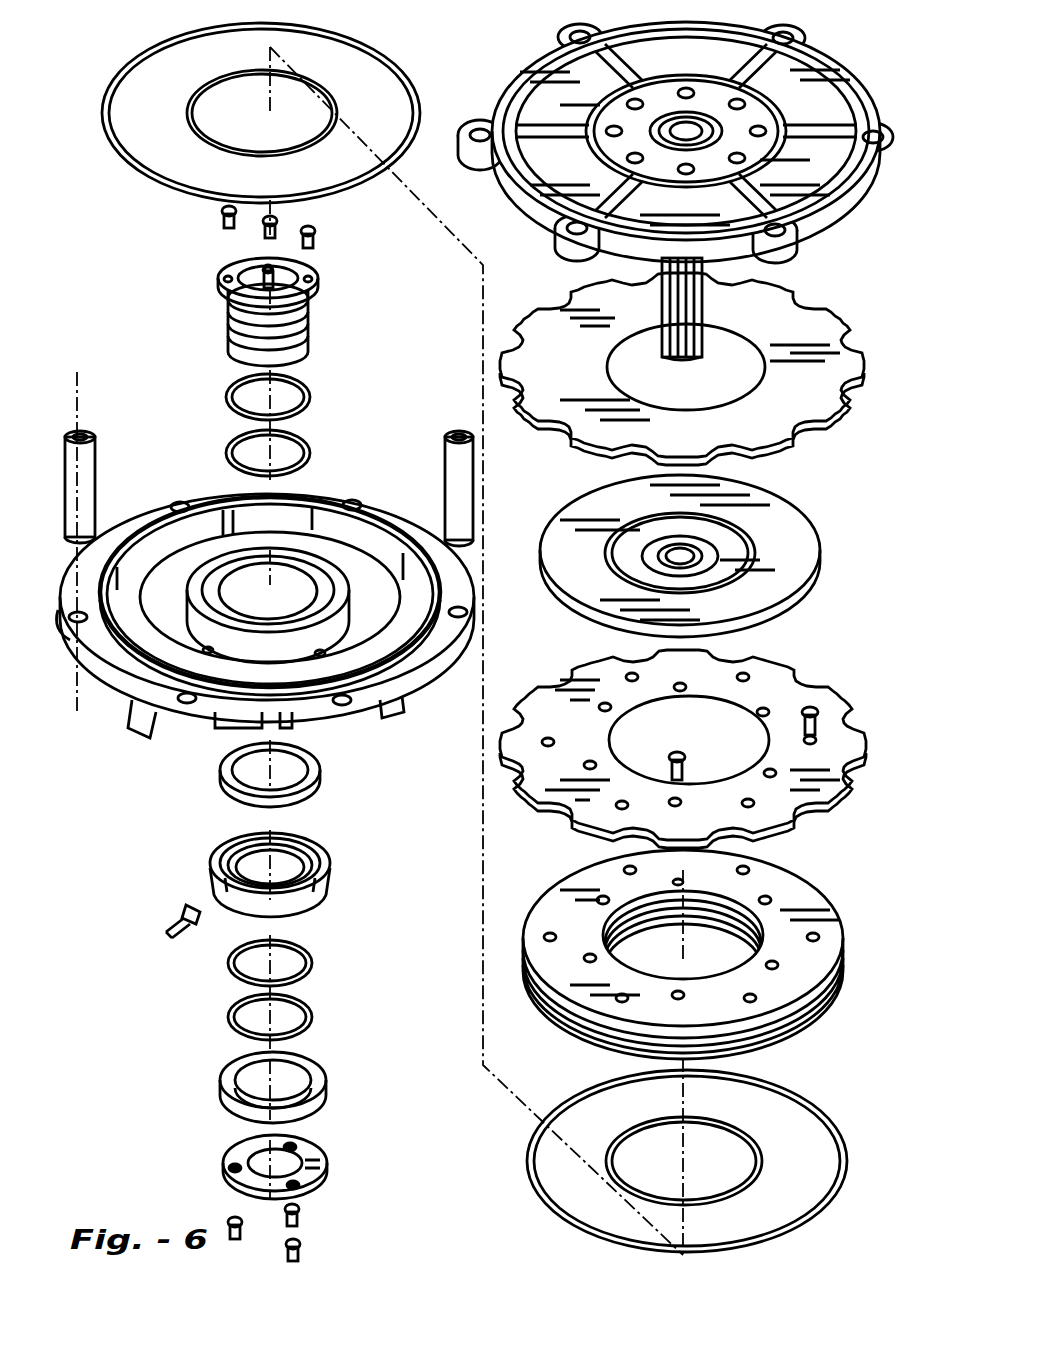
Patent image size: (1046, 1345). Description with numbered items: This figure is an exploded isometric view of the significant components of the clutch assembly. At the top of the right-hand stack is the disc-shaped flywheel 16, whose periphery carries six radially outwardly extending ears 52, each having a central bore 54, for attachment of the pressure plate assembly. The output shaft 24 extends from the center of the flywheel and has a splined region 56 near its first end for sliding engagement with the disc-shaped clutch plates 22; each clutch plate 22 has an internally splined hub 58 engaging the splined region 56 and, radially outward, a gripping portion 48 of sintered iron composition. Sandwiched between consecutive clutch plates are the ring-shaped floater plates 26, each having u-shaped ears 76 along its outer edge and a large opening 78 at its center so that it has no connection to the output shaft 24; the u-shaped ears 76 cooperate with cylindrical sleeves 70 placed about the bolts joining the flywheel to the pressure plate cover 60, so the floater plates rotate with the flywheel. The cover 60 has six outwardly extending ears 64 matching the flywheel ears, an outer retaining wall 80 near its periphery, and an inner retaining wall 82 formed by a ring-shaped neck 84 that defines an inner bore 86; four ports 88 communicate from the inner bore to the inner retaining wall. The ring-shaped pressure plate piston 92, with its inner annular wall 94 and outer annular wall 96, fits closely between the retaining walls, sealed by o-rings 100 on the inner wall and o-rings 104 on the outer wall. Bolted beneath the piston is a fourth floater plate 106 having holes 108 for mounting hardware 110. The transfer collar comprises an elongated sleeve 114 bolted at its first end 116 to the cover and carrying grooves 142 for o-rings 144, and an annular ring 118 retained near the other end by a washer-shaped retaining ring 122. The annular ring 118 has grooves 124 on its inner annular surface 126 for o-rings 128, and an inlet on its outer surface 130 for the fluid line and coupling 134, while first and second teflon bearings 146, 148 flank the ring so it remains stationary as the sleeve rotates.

The flywheel 16 is at (675, 134).
The clutch plate 22 is at (708, 554).
The output shaft 24 is at (700, 305).
The floater plate 26 is at (685, 383).
The gripping portion 48 is at (790, 605).
The ear 52 is at (570, 32).
The central bore 54 is at (783, 30).
The splined region 56 is at (612, 368).
The internally splined hub 58 is at (695, 540).
The pressure plate cover 60 is at (266, 616).
The ear 64 is at (68, 650).
The cylindrical sleeve 70 is at (96, 462).
The u-shaped ear 76 is at (575, 466).
The large opening 78 is at (712, 368).
The outer retaining wall 80 is at (140, 552).
The inner retaining wall 82 is at (200, 652).
The ring-shaped neck 84 is at (338, 585).
The inner bore 86 is at (283, 597).
The port 88 is at (150, 690).
The pressure plate piston 92 is at (697, 961).
The inner annular wall 94 is at (612, 935).
The outer annular wall 96 is at (830, 1000).
The o-ring 100 is at (195, 140).
The o-ring 104 is at (200, 45).
The fourth floater plate 106 is at (697, 733).
The hole 108 is at (766, 715).
The mounting hardware 110 is at (818, 720).
The elongated sleeve 114 is at (260, 306).
The first end 116 is at (322, 275).
The annular ring 118 is at (264, 856).
The retaining ring 122 is at (322, 1158).
The groove 124 is at (300, 835).
The inner annular surface 126 is at (255, 835).
The o-ring 128 is at (308, 1030).
The outer surface 130 is at (232, 872).
The fluid line and coupling 134 is at (193, 938).
The groove 142 is at (320, 330).
The o-ring 144 is at (305, 430).
The first teflon bearing 146 is at (326, 1086).
The second teflon bearing 148 is at (320, 776).